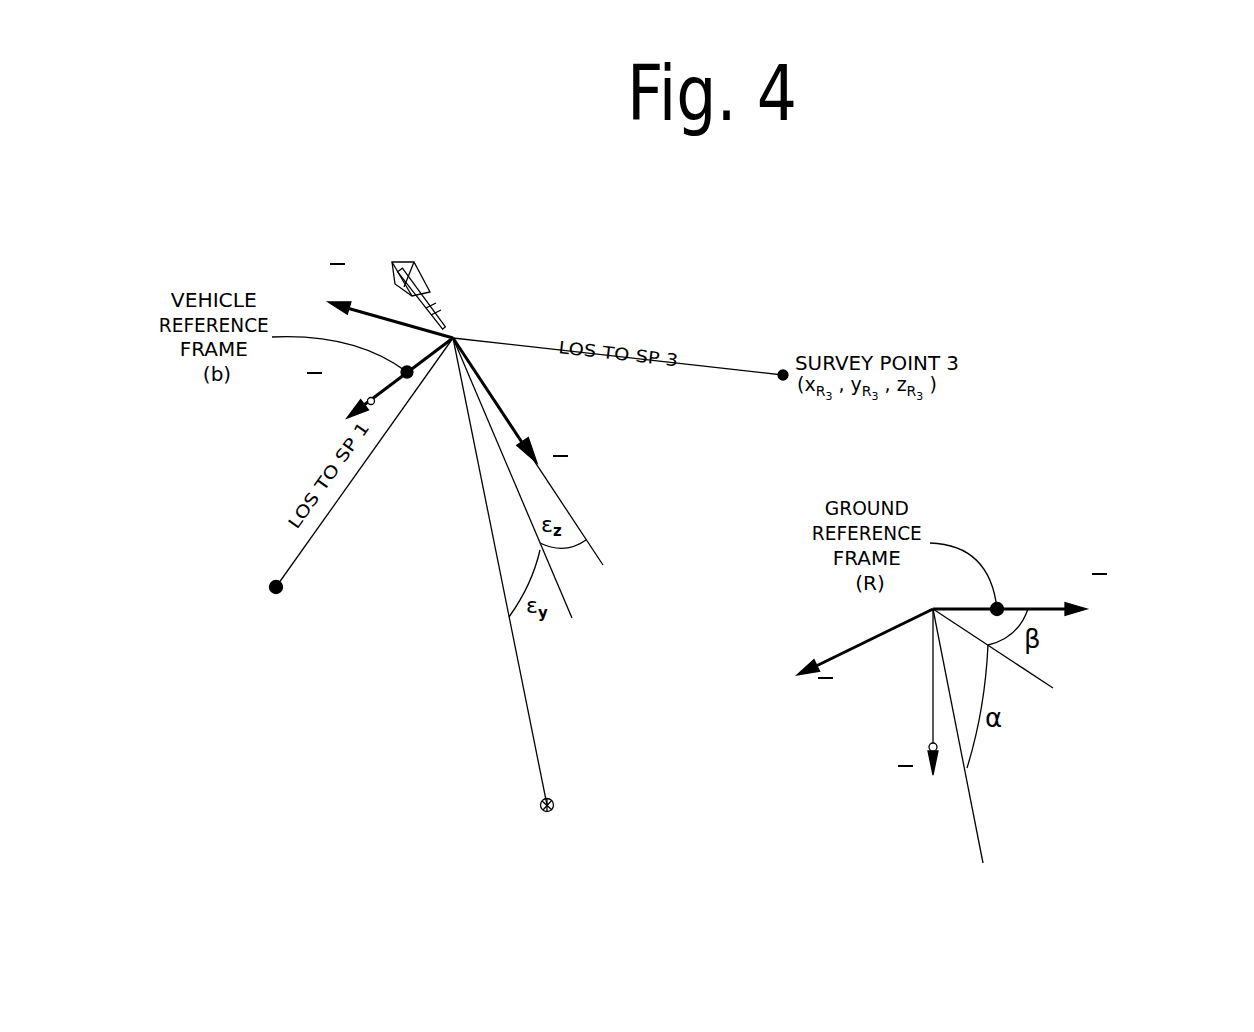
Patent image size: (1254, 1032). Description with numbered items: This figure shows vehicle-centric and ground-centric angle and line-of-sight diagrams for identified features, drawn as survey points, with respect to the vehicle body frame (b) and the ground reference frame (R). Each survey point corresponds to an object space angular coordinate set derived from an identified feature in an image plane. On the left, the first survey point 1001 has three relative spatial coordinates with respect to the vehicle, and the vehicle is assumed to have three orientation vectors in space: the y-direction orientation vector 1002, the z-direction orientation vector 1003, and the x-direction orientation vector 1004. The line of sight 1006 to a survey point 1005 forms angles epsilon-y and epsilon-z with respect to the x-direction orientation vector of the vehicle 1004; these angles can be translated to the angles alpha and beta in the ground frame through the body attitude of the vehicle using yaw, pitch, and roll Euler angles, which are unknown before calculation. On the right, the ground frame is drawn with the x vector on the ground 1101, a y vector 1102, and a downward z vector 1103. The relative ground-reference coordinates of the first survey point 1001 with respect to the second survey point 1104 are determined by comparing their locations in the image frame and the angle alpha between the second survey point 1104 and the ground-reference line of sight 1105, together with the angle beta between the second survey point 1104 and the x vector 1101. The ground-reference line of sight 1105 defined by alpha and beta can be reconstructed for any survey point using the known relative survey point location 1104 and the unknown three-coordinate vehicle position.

The survey point 1 1001 is at (312, 606).
The y-direction orientation vector of the vehicle 1002 is at (345, 277).
The z-direction orientation vector of the vehicle 1003 is at (330, 393).
The x-direction orientation vector of the vehicle 1004 is at (595, 417).
The survey point 1005 is at (463, 743).
The line of sight 1006 is at (543, 571).
The x vector on the ground 1101 is at (1031, 565).
The y vector on the ground 1102 is at (825, 659).
The z vector on the ground 1103 is at (861, 707).
The survey point 2 1104 is at (1085, 675).
The ground-reference line of sight 1105 is at (1043, 736).